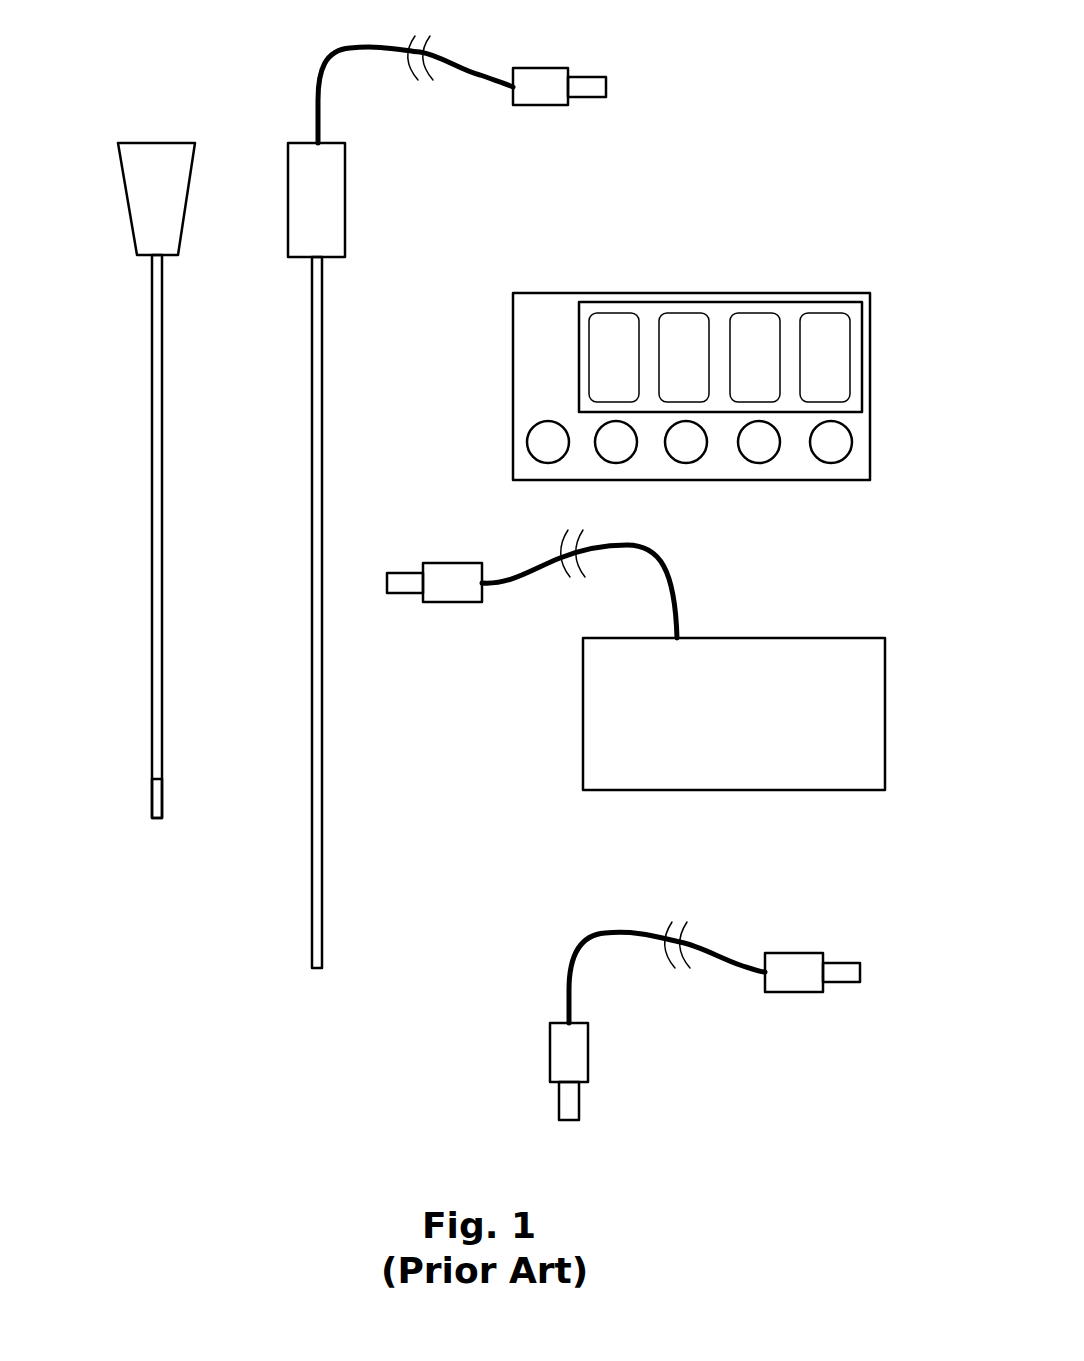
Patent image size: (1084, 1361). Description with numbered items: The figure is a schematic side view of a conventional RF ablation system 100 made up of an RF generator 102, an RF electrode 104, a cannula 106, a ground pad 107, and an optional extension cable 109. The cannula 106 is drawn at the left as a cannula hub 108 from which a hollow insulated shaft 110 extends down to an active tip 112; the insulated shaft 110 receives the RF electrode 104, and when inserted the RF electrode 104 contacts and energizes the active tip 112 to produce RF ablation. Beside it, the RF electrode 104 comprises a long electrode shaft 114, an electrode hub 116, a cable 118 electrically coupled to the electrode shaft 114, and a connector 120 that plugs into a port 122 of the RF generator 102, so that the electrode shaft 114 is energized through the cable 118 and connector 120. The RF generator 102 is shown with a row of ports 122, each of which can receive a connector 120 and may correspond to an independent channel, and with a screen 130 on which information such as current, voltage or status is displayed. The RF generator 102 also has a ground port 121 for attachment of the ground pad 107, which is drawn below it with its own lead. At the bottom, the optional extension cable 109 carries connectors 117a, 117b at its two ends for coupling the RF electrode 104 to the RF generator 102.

The RF ablation system 100 is at (771, 138).
The RF generator 102 is at (737, 381).
The RF electrode 104 is at (322, 340).
The cannula 106 is at (162, 330).
The ground pad 107 is at (885, 705).
The cannula hub 108 is at (124, 203).
The extension cable 109 is at (578, 960).
The insulated shaft 110 is at (152, 640).
The active tip 112 is at (152, 792).
The electrode shaft 114 is at (312, 838).
The electrode hub 116 is at (345, 216).
The connector 117a is at (580, 1090).
The connector 117b is at (841, 983).
The cable 118 is at (345, 55).
The connector 120 is at (598, 98).
The ground port 121 is at (548, 463).
The port 122 is at (759, 463).
The screen 130 is at (650, 302).